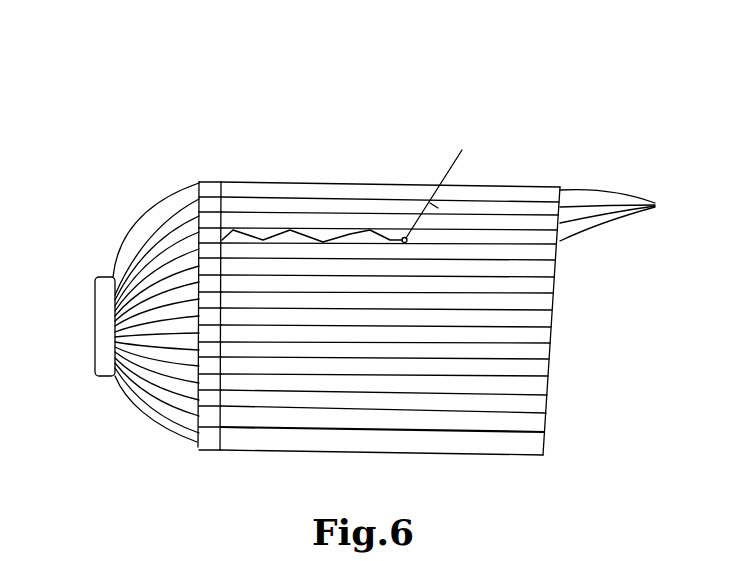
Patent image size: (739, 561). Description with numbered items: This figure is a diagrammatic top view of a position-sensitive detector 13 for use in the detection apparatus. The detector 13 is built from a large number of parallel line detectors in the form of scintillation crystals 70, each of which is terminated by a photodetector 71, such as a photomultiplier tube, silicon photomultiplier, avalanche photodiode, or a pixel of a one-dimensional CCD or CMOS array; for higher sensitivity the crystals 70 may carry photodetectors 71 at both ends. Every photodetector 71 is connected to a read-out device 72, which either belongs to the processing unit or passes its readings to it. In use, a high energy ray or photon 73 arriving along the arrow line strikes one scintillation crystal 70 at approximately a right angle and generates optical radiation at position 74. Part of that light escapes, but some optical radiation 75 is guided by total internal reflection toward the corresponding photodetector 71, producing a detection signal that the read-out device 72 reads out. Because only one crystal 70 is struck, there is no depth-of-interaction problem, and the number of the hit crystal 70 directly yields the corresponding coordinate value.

The detector 13 is at (143, 66).
The scintillation crystals 70 is at (625, 215).
The photodetector 71 is at (212, 190).
The read-out device 72 is at (98, 378).
The high energy ray/photon 73 is at (462, 150).
The position 74 is at (407, 236).
The optical radiation 75 is at (348, 233).